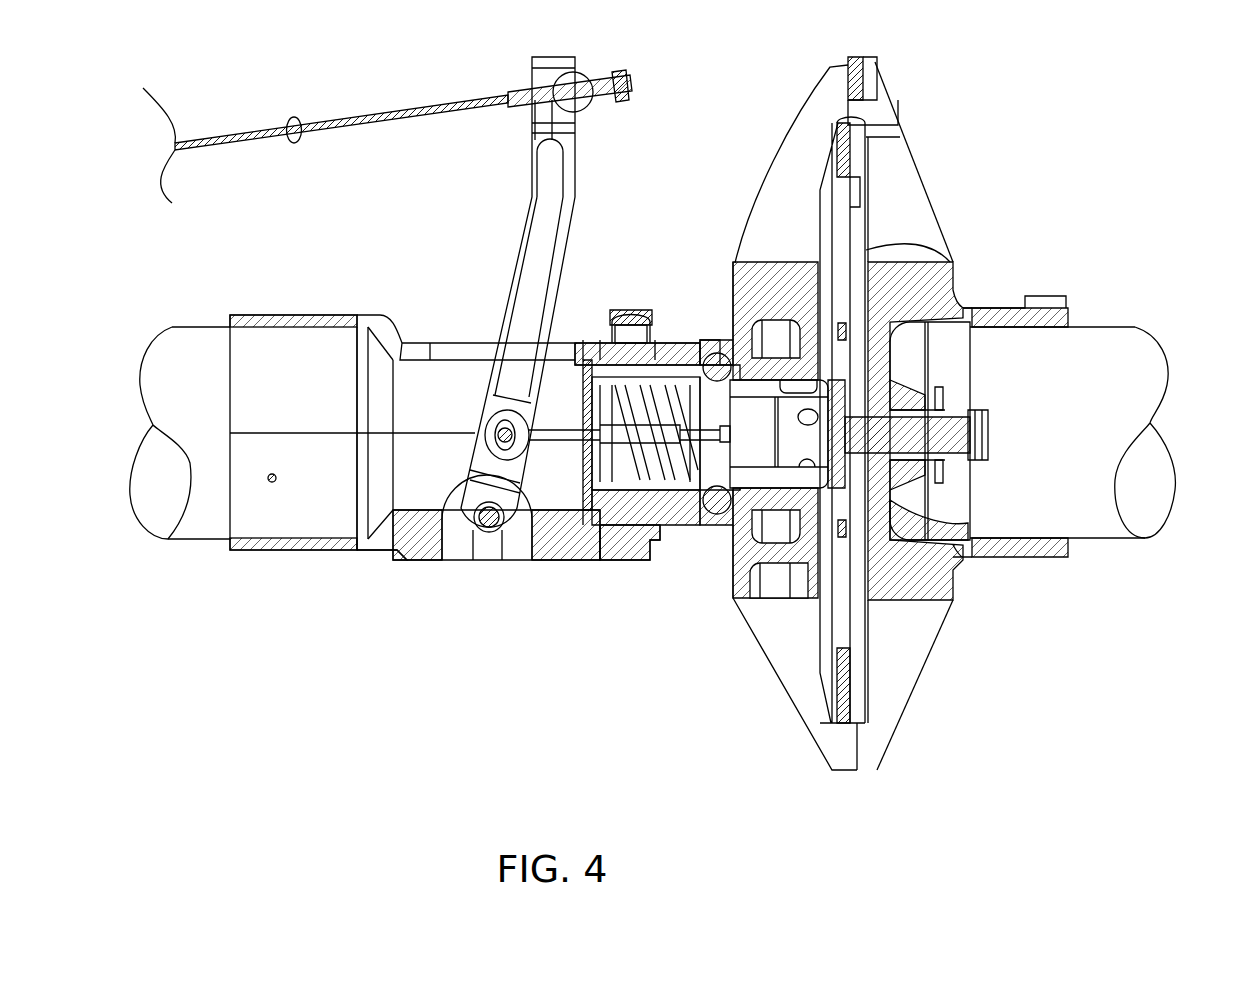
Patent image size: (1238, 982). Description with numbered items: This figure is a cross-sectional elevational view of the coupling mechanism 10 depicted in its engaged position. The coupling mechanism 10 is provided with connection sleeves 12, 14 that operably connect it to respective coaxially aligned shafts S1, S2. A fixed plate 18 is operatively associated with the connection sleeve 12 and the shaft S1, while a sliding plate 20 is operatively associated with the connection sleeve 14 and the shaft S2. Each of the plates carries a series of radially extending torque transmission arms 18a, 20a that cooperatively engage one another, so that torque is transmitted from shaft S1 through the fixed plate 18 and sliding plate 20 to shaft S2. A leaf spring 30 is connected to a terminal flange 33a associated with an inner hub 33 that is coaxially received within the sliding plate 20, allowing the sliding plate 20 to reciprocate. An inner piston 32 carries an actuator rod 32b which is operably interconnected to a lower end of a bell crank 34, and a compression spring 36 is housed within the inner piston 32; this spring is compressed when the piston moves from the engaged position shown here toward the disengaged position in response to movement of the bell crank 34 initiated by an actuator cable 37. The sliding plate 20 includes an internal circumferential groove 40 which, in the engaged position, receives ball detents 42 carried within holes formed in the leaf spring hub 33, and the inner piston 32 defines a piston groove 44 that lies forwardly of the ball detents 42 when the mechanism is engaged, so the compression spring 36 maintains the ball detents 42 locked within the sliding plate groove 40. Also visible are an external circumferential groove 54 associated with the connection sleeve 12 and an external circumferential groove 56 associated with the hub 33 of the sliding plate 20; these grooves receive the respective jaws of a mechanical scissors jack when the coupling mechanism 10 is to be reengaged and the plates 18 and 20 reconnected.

The coupling mechanism 10 is at (528, 699).
The connection sleeve 12 is at (1032, 552).
The connection sleeve 14 is at (293, 547).
The fixed plate 18 is at (886, 312).
The torque transmission arms 18a is at (900, 207).
The sliding plate 20 is at (756, 307).
The torque transmission arms 20a is at (803, 147).
The leaf spring 30 is at (833, 247).
The inner piston 32 is at (800, 600).
The actuator rod 32b is at (563, 437).
The inner hub 33 is at (605, 345).
The terminal flange 33a is at (895, 627).
The bell crank 34 is at (548, 223).
The compression spring 36 is at (668, 520).
The actuator cable 37 is at (298, 118).
The internal circumferential groove 40 is at (708, 352).
The ball detents 42 is at (690, 312).
The piston groove 44 is at (715, 352).
The external circumferential groove 54 is at (643, 540).
The external circumferential groove 56 is at (690, 545).
The shaft S1 is at (1060, 401).
The shaft S2 is at (205, 522).